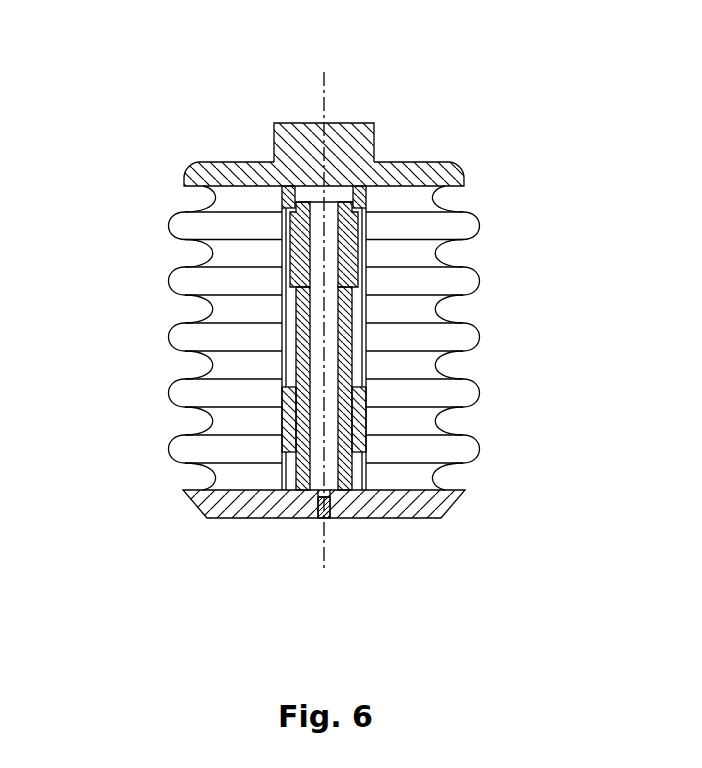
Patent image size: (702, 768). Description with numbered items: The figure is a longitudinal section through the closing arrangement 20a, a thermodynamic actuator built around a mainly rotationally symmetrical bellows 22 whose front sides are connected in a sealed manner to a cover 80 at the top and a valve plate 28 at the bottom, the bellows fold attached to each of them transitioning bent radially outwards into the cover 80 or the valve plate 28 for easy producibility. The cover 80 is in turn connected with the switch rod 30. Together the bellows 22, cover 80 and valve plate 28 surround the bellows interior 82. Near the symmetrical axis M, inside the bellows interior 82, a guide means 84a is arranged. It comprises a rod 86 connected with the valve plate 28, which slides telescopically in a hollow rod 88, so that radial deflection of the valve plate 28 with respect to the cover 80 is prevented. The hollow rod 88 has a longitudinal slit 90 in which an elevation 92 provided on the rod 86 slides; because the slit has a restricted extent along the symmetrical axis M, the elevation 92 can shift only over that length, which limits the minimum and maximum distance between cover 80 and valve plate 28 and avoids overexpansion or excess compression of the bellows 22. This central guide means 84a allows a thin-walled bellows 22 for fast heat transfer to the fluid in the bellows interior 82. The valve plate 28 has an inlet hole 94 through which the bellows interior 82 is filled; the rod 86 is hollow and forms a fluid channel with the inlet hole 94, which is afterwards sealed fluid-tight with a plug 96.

The closing arrangement 20a is at (145, 145).
The symmetrical axis M is at (323, 98).
The switch rod 30 is at (342, 136).
The cover 80 is at (402, 172).
The hollow rod 88 is at (360, 200).
The elevation 92 is at (355, 268).
The longitudinal slit 90 is at (360, 313).
The guide means 84a is at (388, 394).
The bellows 22 is at (168, 335).
The bellows interior 82 is at (253, 346).
The rod 86 is at (297, 478).
The valve plate 28 is at (200, 512).
The inlet hole 94 is at (338, 497).
The plug 96 is at (317, 510).